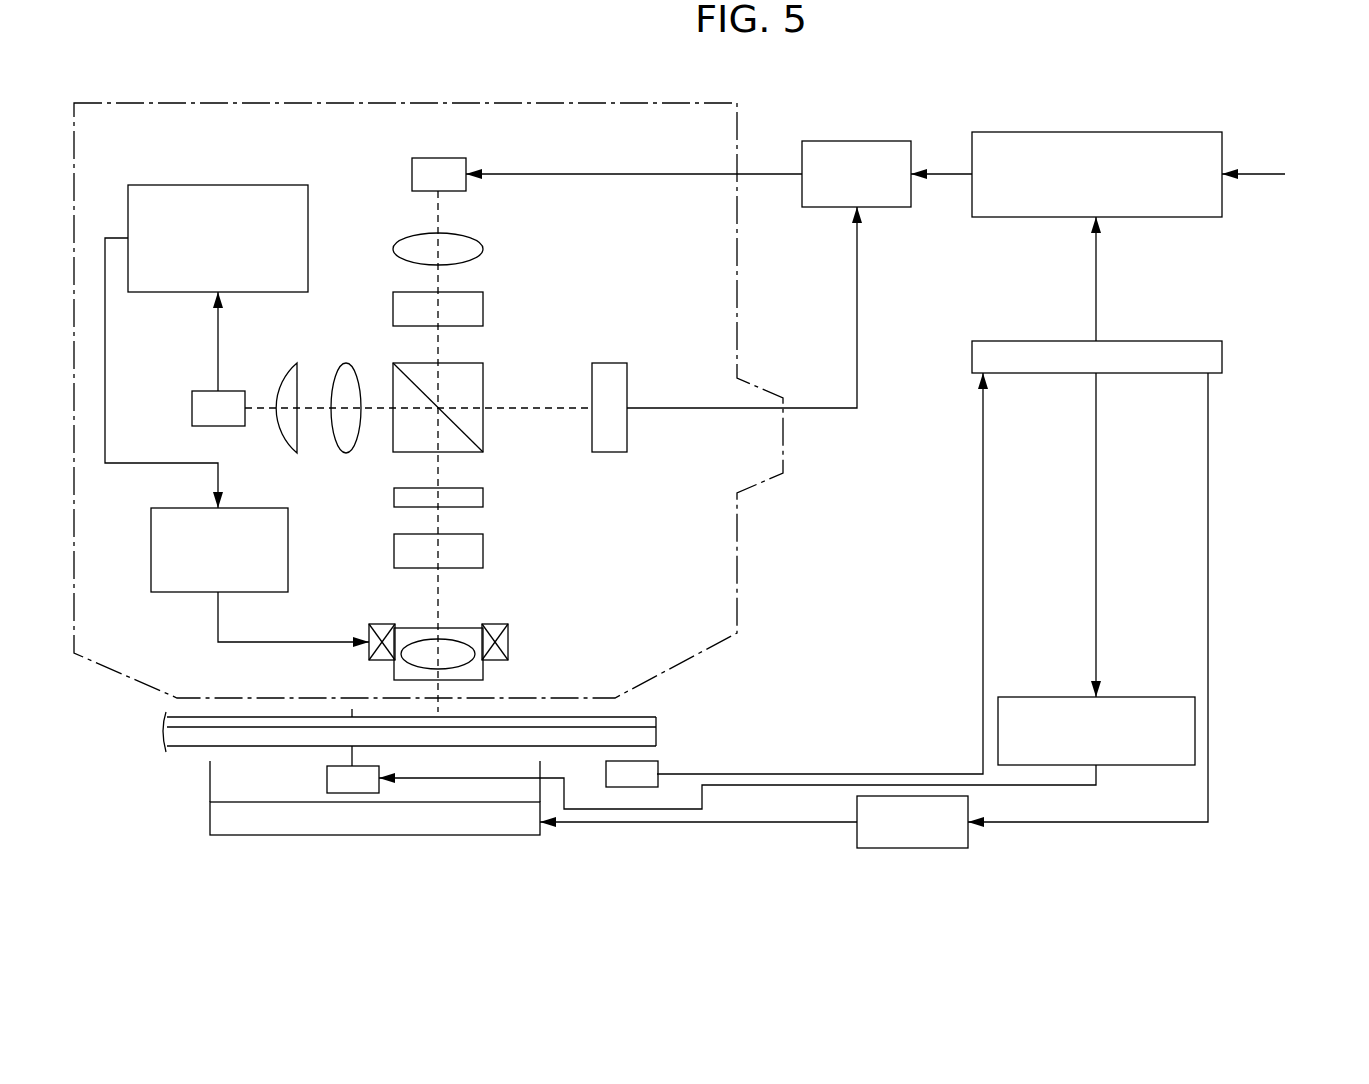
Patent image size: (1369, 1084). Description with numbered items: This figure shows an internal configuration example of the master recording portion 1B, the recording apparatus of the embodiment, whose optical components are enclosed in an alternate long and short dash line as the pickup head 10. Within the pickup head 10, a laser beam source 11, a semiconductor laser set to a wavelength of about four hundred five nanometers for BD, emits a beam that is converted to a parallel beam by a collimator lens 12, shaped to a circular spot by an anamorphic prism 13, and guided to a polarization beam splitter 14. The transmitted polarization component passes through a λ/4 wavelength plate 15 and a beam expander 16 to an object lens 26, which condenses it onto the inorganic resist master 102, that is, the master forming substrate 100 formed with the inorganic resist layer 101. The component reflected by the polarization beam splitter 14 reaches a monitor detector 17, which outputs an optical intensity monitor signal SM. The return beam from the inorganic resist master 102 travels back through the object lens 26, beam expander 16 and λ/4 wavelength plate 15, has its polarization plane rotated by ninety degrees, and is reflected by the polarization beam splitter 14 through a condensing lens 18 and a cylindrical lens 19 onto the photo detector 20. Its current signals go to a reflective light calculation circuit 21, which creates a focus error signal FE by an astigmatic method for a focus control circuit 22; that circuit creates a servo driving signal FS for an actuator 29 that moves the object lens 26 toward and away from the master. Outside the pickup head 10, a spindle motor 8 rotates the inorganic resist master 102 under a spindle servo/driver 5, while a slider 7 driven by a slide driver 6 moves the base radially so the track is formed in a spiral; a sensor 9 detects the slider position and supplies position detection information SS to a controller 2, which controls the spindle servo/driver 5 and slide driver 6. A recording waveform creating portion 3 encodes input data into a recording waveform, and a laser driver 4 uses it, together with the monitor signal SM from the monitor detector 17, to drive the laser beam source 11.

The master recording portion 1B is at (862, 52).
The pickup head 10 is at (168, 103).
The laser beam source 11 is at (440, 158).
The collimator lens 12 is at (483, 248).
The anamorphic prism 13 is at (483, 306).
The polarization beam splitter 14 is at (483, 386).
The λ/4 wavelength plate 15 is at (483, 494).
The beam expander 16 is at (483, 551).
The monitor detector 17 is at (627, 384).
The condensing lens 18 is at (346, 366).
The cylindrical lens 19 is at (285, 366).
The photo detector 20 is at (198, 391).
The reflective light calculation circuit 21 is at (232, 185).
The focus control circuit 22 is at (288, 545).
The object lens 26 is at (483, 671).
The actuator 29 is at (508, 637).
The controller 2 is at (1178, 341).
The recording waveform creating portion 3 is at (1150, 132).
The laser driver 4 is at (857, 141).
The spindle servo/driver 5 is at (1135, 697).
The slide driver 6 is at (968, 838).
The slider 7 is at (210, 818).
The spindle motor 8 is at (327, 775).
The sensor 9 is at (650, 760).
The master forming substrate 100 is at (650, 738).
The inorganic resist layer 101 is at (638, 720).
The inorganic resist master 102 is at (783, 652).